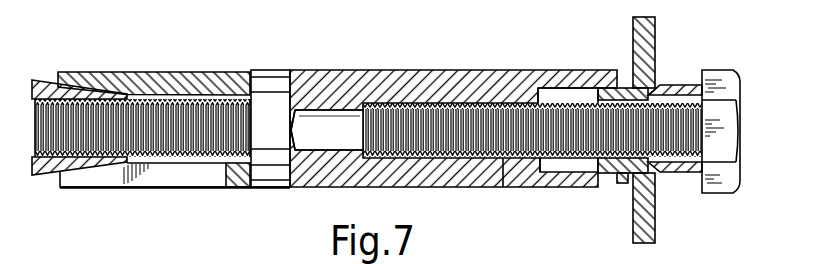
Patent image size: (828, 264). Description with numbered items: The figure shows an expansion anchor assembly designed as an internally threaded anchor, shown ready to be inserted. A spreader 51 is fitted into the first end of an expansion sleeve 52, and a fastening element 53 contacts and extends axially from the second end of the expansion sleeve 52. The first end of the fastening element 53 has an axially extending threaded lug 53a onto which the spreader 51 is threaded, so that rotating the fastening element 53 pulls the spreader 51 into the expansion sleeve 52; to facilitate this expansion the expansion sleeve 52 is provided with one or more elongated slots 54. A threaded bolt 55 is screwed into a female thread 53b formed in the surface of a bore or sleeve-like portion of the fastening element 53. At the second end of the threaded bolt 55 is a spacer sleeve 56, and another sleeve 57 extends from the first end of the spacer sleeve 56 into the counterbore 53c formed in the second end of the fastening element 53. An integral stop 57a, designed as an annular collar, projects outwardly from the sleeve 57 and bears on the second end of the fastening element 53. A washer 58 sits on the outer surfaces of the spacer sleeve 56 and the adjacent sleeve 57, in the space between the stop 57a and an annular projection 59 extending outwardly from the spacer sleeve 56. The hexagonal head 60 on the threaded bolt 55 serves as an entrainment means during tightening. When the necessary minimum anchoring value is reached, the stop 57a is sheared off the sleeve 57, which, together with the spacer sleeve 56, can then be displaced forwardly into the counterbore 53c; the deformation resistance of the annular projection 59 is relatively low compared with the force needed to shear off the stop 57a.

The spreader 51 is at (50, 166).
The expansion sleeve 52 is at (197, 82).
The fastening element 53 is at (456, 67).
The threaded lug 53a is at (62, 112).
The female thread 53b is at (388, 104).
The counterbore 53c is at (563, 92).
The elongated slot 54 is at (212, 180).
The threaded bolt 55 is at (503, 188).
The spacer sleeve 56 is at (685, 174).
The sleeve 57 is at (596, 180).
The stop 57a is at (622, 185).
The washer 58 is at (656, 32).
The annular projection 59 is at (663, 86).
The hexagonal head 60 is at (722, 182).